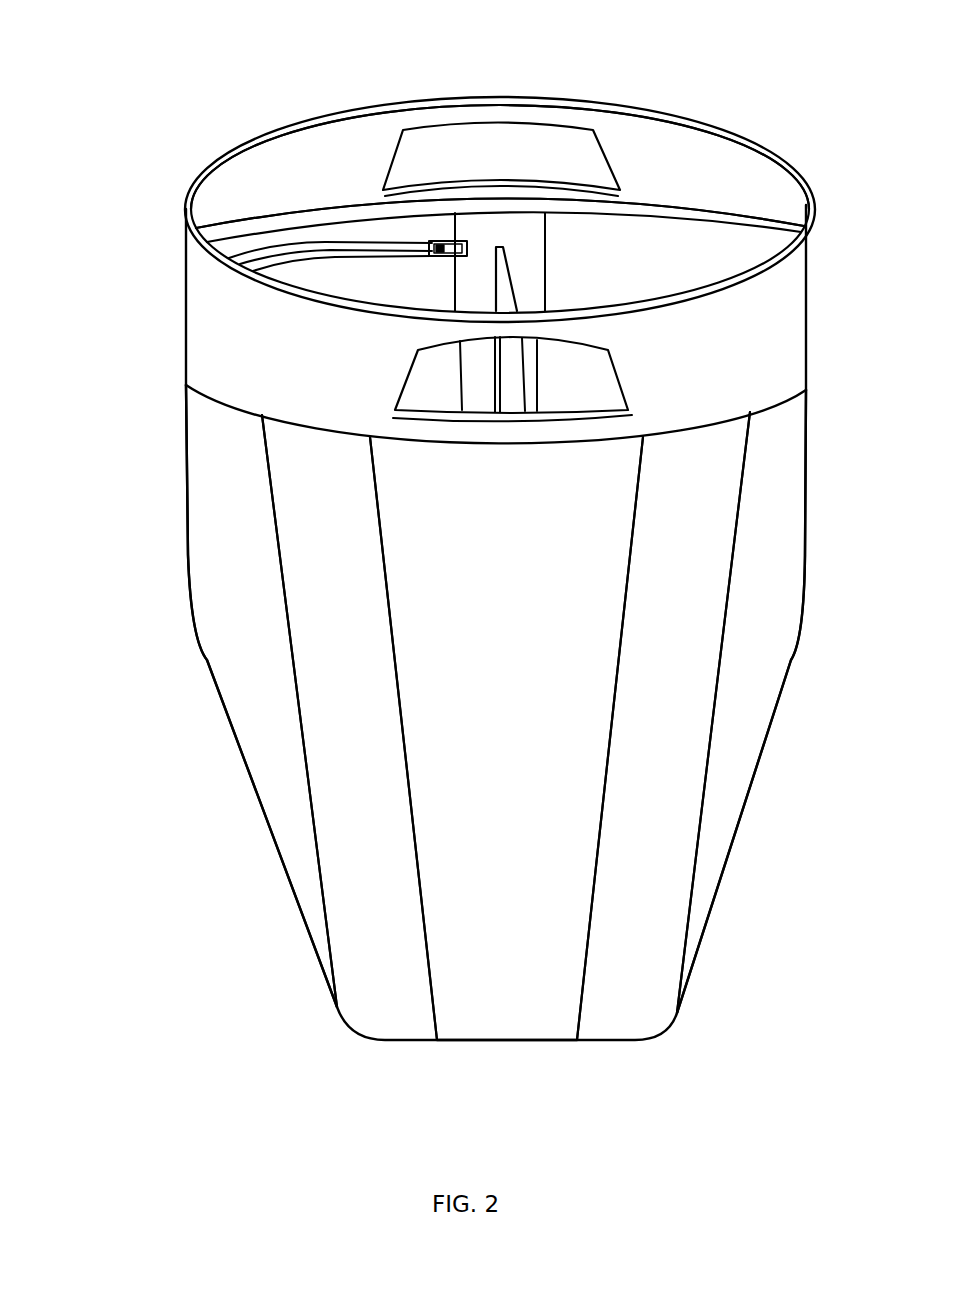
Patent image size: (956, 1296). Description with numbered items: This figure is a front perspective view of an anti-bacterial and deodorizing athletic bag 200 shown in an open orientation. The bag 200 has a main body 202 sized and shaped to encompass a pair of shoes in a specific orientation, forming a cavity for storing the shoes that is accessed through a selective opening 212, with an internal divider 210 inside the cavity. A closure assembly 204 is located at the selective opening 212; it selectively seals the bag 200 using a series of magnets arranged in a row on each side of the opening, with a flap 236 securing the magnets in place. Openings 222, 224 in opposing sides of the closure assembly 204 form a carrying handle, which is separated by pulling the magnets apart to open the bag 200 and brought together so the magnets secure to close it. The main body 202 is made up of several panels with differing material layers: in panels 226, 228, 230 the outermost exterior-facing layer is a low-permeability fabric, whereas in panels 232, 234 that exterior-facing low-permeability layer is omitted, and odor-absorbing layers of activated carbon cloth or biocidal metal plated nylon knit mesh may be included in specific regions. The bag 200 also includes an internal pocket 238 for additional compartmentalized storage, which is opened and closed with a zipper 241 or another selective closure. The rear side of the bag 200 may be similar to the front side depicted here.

The anti-bacterial and deodorizing athletic bag 200 is at (142, 70).
The main body 202 is at (163, 546).
The closure assembly 204 is at (712, 182).
The internal divider 210 is at (512, 285).
The selective opening 212 is at (313, 158).
The opening 222 is at (522, 164).
The opening 224 is at (600, 397).
The panel 226 is at (252, 576).
The panel 228 is at (529, 576).
The panel 230 is at (789, 576).
The panel 232 is at (362, 636).
The panel 234 is at (692, 636).
The flap 236 is at (297, 220).
The internal pocket 238 is at (439, 294).
The zipper 241 is at (437, 243).